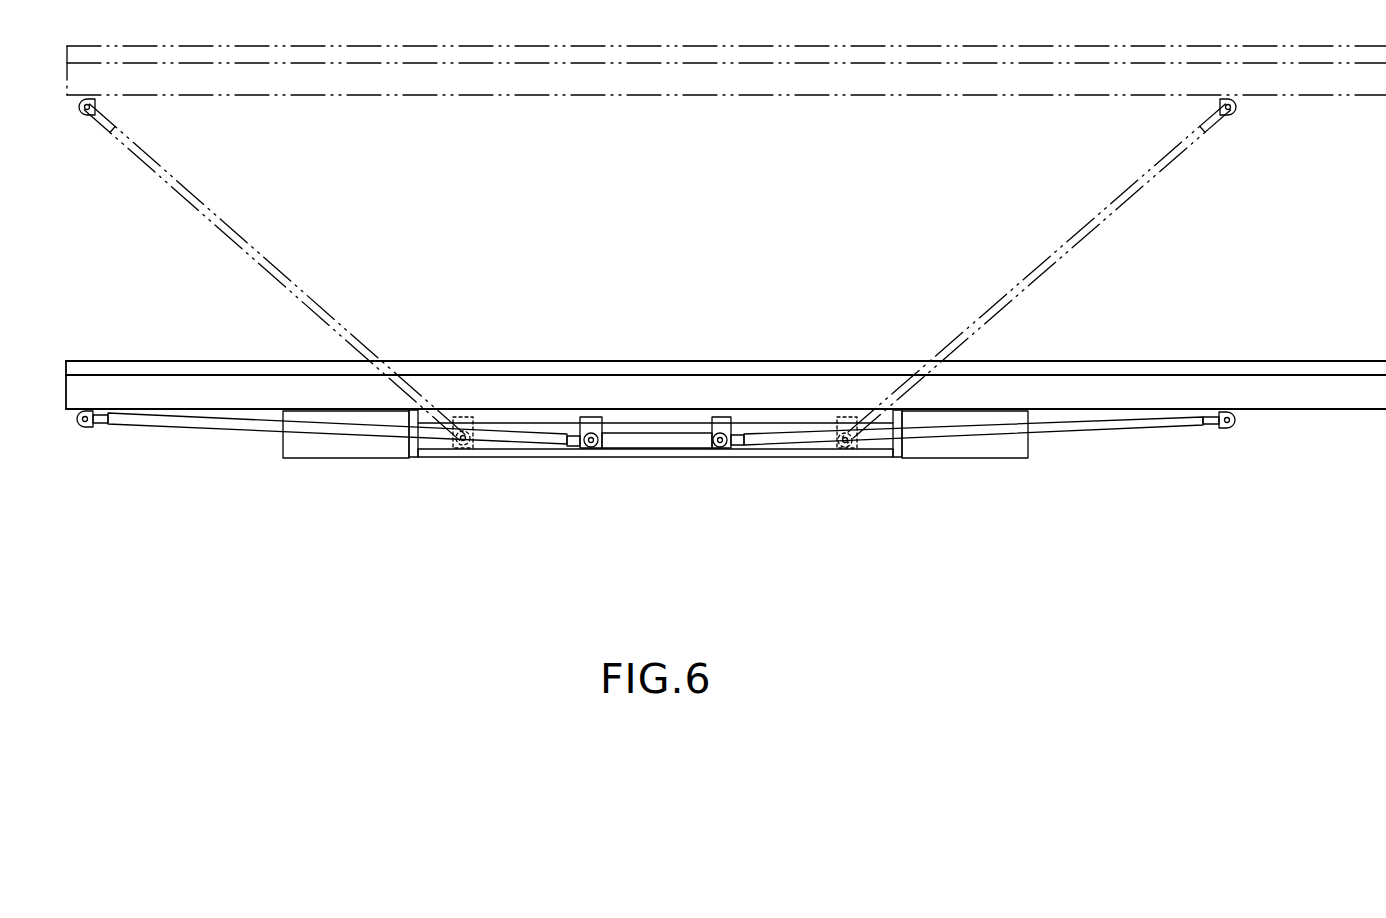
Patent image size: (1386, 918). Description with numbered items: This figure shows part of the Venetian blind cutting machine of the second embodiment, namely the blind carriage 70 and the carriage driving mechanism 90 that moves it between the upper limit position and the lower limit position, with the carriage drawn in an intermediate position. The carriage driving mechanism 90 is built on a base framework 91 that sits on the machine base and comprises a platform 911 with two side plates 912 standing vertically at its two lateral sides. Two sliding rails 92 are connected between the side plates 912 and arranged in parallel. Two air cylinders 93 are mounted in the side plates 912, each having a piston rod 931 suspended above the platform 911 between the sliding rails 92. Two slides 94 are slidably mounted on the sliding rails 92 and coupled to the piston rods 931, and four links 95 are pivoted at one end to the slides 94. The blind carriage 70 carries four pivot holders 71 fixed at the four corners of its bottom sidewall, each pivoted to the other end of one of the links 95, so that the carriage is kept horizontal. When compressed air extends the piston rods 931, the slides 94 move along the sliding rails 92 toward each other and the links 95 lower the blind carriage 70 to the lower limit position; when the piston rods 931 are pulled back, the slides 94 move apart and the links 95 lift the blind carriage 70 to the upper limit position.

The blind carriage 70 is at (1245, 360).
The pivot holder 71 is at (1238, 108).
The carriage driving mechanism 90 is at (640, 467).
The base framework 91 is at (668, 507).
The platform 911 is at (655, 498).
The side plate 912 is at (413, 456).
The sliding rail 92 is at (661, 433).
The air cylinder 93 is at (348, 456).
The piston rod 931 is at (790, 425).
The slide 94 is at (588, 423).
The link 95 is at (388, 452).